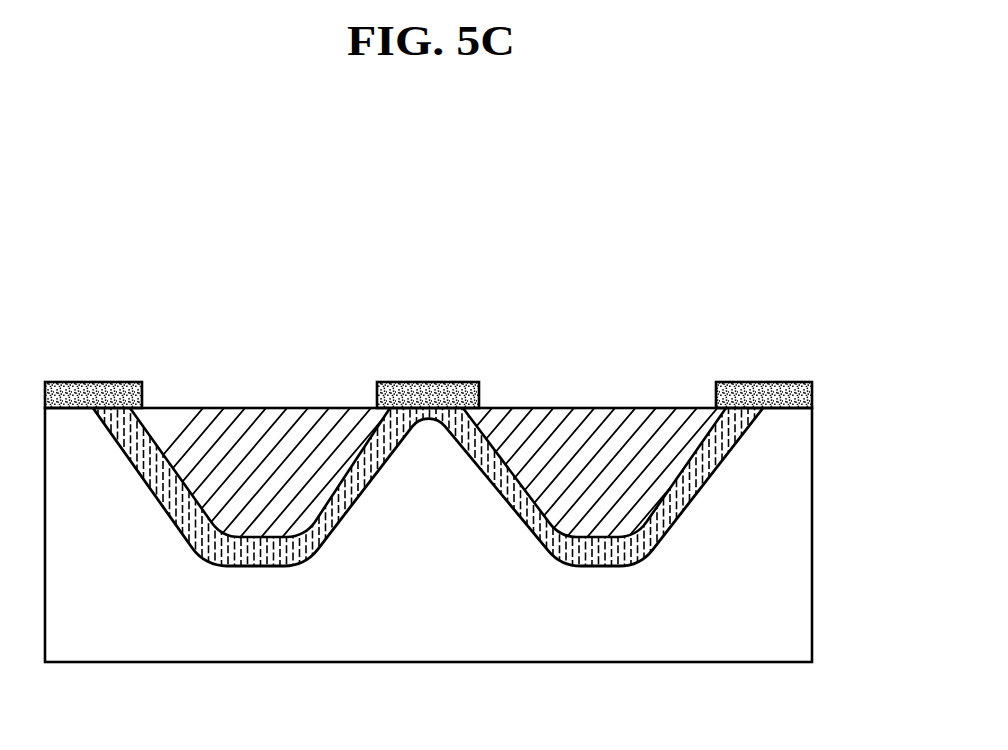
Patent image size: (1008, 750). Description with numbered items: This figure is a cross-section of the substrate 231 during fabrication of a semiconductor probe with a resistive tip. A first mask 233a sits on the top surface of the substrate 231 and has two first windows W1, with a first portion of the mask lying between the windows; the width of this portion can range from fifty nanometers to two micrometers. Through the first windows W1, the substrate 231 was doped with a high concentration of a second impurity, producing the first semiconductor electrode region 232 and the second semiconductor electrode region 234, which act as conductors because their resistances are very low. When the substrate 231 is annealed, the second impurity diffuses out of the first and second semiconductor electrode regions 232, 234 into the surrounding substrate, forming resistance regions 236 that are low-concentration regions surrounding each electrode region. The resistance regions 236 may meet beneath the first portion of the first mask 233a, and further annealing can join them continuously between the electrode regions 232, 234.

The substrate 231 is at (803, 539).
The first semiconductor electrode region 232 is at (250, 420).
The first mask 233a is at (92, 382).
The second semiconductor electrode region 234 is at (614, 420).
The resistance region 236 is at (353, 505).
The first window W1 is at (376, 402).